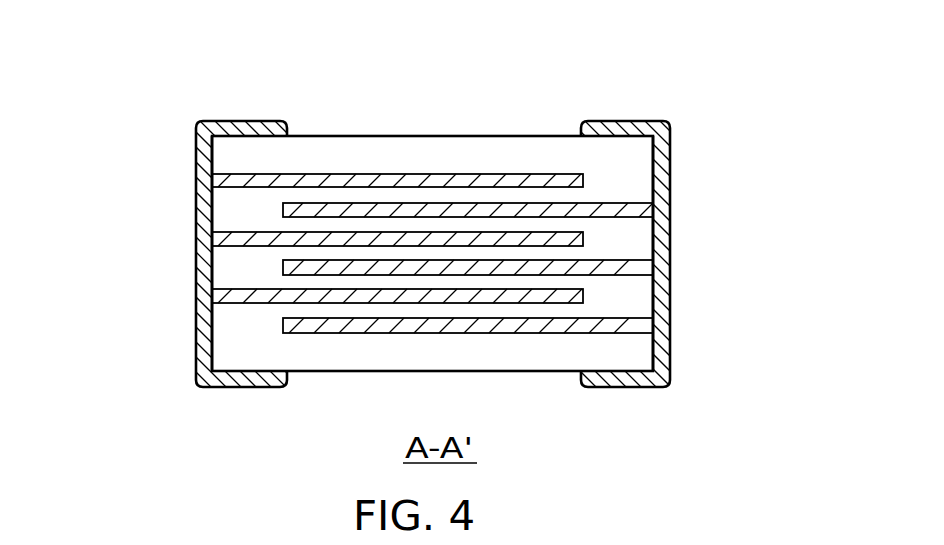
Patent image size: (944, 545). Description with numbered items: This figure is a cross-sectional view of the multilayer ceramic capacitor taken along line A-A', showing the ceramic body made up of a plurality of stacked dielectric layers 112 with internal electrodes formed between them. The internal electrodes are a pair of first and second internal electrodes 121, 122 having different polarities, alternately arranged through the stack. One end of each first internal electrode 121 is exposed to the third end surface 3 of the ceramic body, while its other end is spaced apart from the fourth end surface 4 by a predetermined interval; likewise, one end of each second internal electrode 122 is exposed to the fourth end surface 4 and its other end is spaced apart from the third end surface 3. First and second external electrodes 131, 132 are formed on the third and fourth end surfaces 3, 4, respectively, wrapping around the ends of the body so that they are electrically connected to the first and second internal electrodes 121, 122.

The dielectric layer 112 is at (557, 254).
The first internal electrode 121 is at (253, 235).
The second internal electrode 122 is at (628, 270).
The first external electrode 131 is at (243, 127).
The second external electrode 132 is at (625, 122).
The third end surface 3 is at (183, 315).
The fourth end surface 4 is at (682, 182).